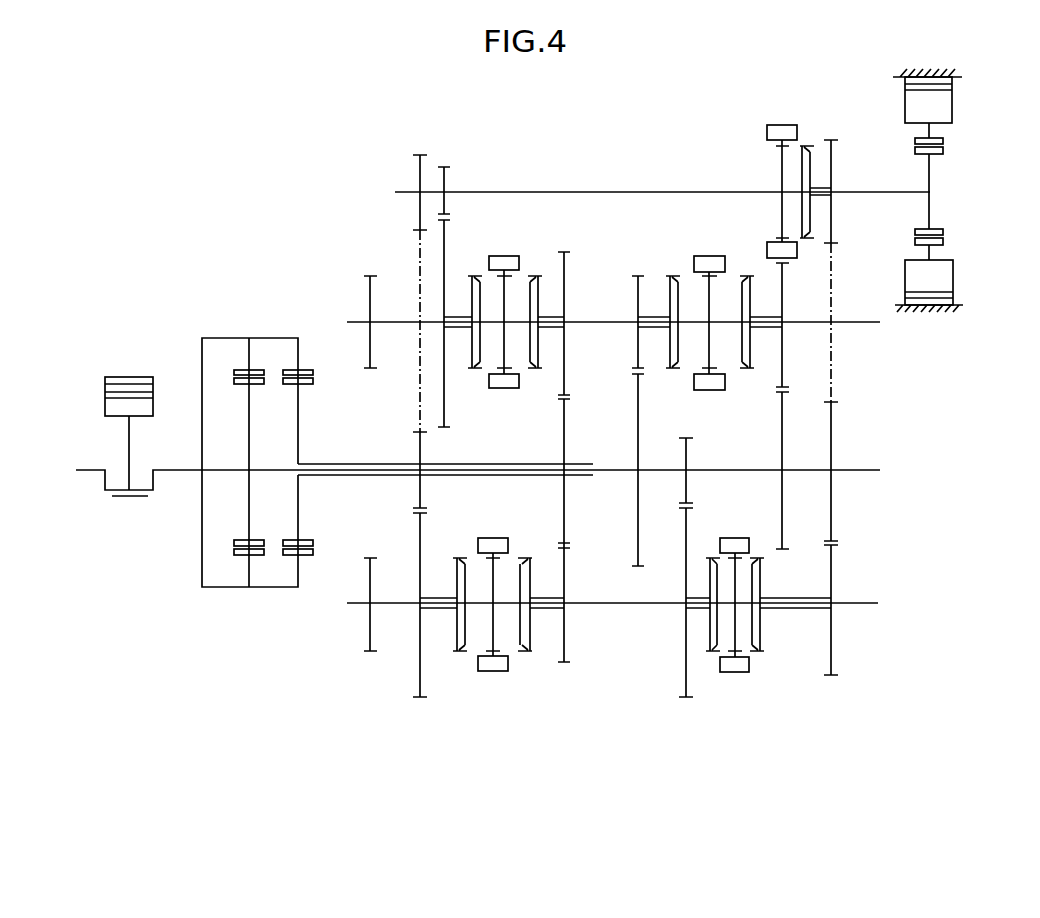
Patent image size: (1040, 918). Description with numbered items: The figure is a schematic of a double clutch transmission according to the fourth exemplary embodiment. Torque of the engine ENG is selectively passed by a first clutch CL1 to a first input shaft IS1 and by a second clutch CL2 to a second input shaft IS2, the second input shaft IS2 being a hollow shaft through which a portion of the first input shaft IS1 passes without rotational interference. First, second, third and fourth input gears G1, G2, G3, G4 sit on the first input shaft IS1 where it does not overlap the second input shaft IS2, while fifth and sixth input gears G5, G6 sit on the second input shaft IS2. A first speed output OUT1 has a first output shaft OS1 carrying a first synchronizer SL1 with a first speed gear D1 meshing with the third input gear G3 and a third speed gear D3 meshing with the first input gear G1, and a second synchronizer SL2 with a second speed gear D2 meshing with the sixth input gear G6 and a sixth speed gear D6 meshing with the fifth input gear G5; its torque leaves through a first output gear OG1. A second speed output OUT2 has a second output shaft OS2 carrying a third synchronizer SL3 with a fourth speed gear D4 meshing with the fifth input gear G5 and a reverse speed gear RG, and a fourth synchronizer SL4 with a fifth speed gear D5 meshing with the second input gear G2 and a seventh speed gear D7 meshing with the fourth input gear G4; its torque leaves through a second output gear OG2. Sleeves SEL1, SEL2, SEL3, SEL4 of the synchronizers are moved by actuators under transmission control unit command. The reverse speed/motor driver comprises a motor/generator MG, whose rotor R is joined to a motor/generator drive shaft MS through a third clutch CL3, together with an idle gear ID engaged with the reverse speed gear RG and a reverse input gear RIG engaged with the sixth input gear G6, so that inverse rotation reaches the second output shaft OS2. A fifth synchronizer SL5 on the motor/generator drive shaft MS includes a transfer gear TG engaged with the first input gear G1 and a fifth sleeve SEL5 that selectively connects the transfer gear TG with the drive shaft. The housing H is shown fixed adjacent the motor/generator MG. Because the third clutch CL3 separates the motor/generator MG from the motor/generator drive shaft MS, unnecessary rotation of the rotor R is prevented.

The engine ENG is at (118, 366).
The first clutch CL1 is at (238, 462).
The second clutch CL2 is at (288, 462).
The third clutch CL3 is at (962, 141).
The motor/generator drive shaft MS is at (661, 192).
The first input shaft IS1 is at (333, 472).
The second input shaft IS2 is at (375, 477).
The first output shaft OS1 is at (858, 603).
The second output shaft OS2 is at (843, 322).
The first speed output OUT1 is at (590, 635).
The second speed output OUT2 is at (581, 267).
The reverse input gear RIG is at (418, 174).
The idle gear ID is at (447, 172).
The reverse speed gear RG is at (446, 394).
The first output gear OG1 is at (369, 583).
The second output gear OG2 is at (369, 296).
The first input gear G1 is at (835, 488).
The second input gear G2 is at (784, 488).
The third input gear G3 is at (688, 488).
The fourth input gear G4 is at (636, 496).
The fifth input gear G5 is at (562, 503).
The sixth input gear G6 is at (422, 490).
The first speed gear D1 is at (684, 656).
The second speed gear D2 is at (420, 680).
The third speed gear D3 is at (833, 641).
The fourth speed gear D4 is at (566, 268).
The fifth speed gear D5 is at (784, 287).
The sixth speed gear D6 is at (566, 637).
The seventh speed gear D7 is at (636, 297).
The first sleeve SEL1 is at (735, 673).
The second sleeve SEL2 is at (493, 672).
The third sleeve SEL3 is at (504, 256).
The fourth sleeve SEL4 is at (709, 256).
The fifth sleeve SEL5 is at (782, 125).
The first synchronizer SL1 is at (790, 683).
The second synchronizer SL2 is at (541, 682).
The third synchronizer SL3 is at (543, 236).
The fourth synchronizer SL4 is at (674, 246).
The fifth synchronizer SL5 is at (746, 120).
The transfer gear TG is at (833, 153).
The motor/generator MG is at (911, 185).
The housing H is at (963, 72).
The rotor R is at (953, 108).